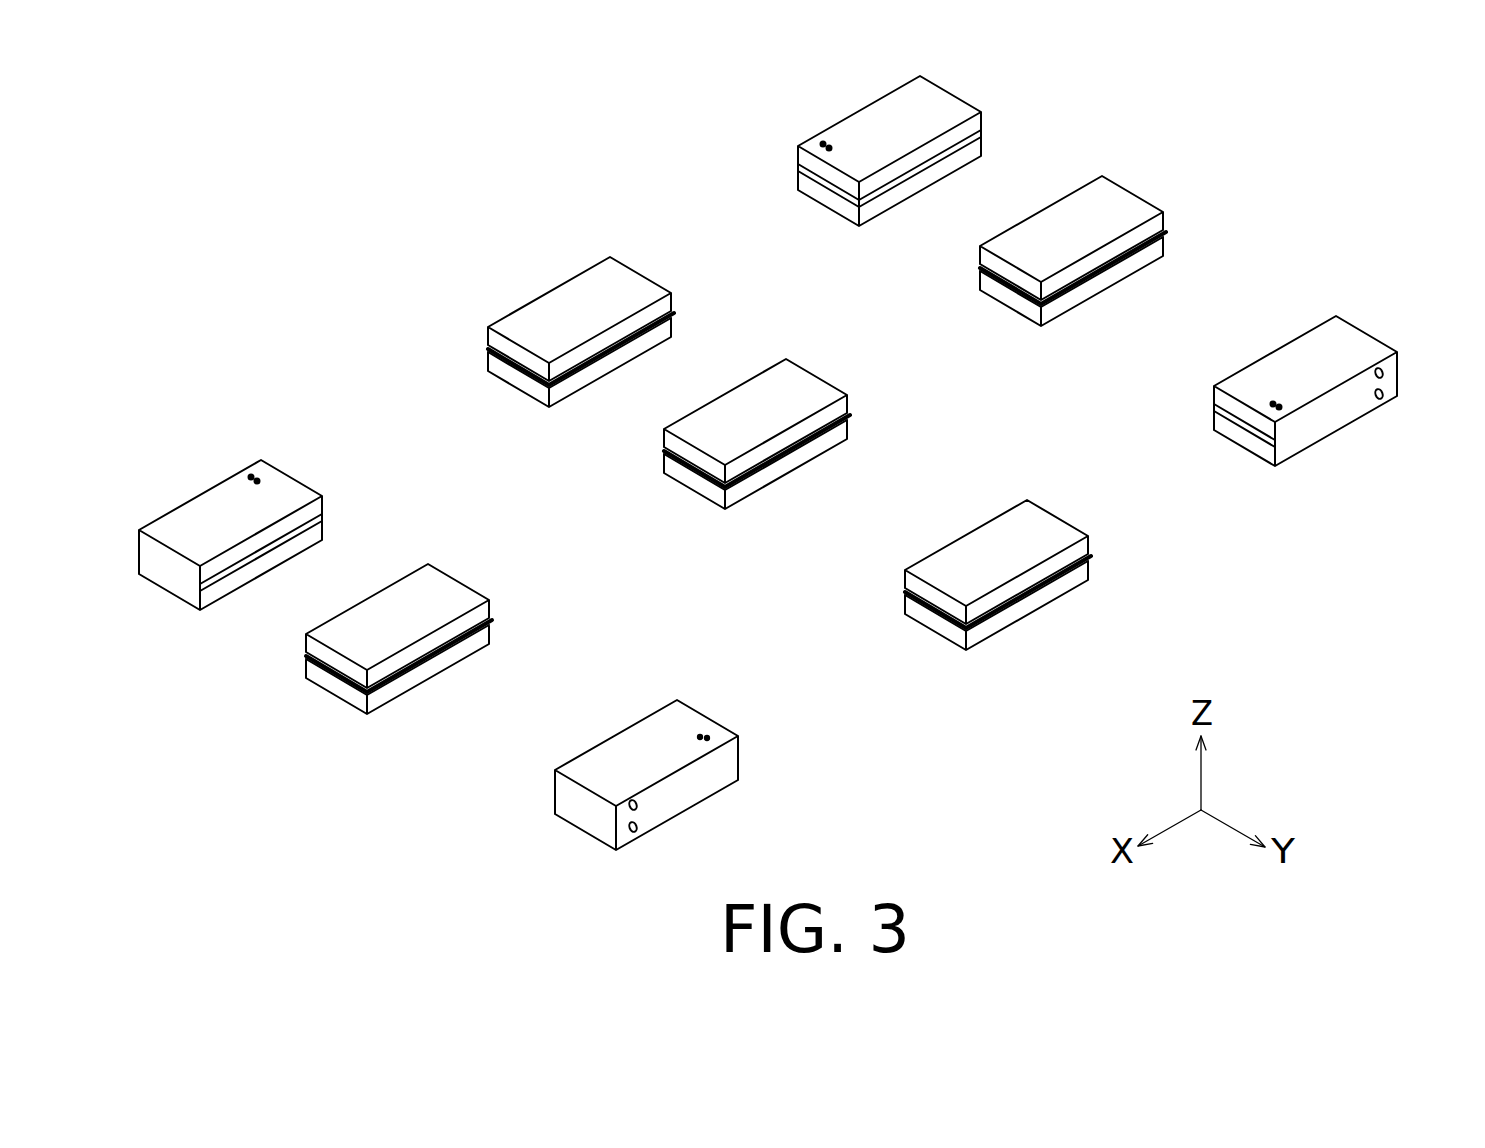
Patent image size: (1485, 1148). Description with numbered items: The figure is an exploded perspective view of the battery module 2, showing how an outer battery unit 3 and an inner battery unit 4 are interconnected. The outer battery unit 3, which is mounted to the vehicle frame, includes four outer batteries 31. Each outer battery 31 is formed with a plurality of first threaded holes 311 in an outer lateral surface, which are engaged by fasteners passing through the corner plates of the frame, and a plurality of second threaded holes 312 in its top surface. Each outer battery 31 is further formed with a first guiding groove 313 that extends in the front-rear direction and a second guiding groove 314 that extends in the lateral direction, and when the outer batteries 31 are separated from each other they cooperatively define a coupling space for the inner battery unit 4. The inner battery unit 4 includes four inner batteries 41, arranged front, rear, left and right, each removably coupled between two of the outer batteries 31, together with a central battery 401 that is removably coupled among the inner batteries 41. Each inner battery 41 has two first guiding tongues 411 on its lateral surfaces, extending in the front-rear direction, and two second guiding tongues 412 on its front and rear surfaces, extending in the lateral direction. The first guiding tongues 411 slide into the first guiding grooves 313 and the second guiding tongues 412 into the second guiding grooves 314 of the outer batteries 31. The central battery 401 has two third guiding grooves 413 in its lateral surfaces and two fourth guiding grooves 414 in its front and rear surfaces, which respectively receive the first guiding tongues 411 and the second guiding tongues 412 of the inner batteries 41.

The battery module 2 is at (197, 185).
The outer battery unit 3 is at (582, 845).
The outer battery 31 is at (985, 86).
The first threaded hole 311 is at (644, 805).
The second threaded hole 312 is at (700, 734).
The first guiding groove 313 is at (930, 163).
The second guiding groove 314 is at (823, 182).
The inner battery unit 4 is at (395, 556).
The inner battery 41 is at (1165, 172).
The first guiding tongue 411 is at (1113, 253).
The second guiding tongue 412 is at (1020, 300).
The central battery 401 is at (710, 385).
The third guiding groove 413 is at (815, 426).
The fourth guiding groove 414 is at (692, 477).